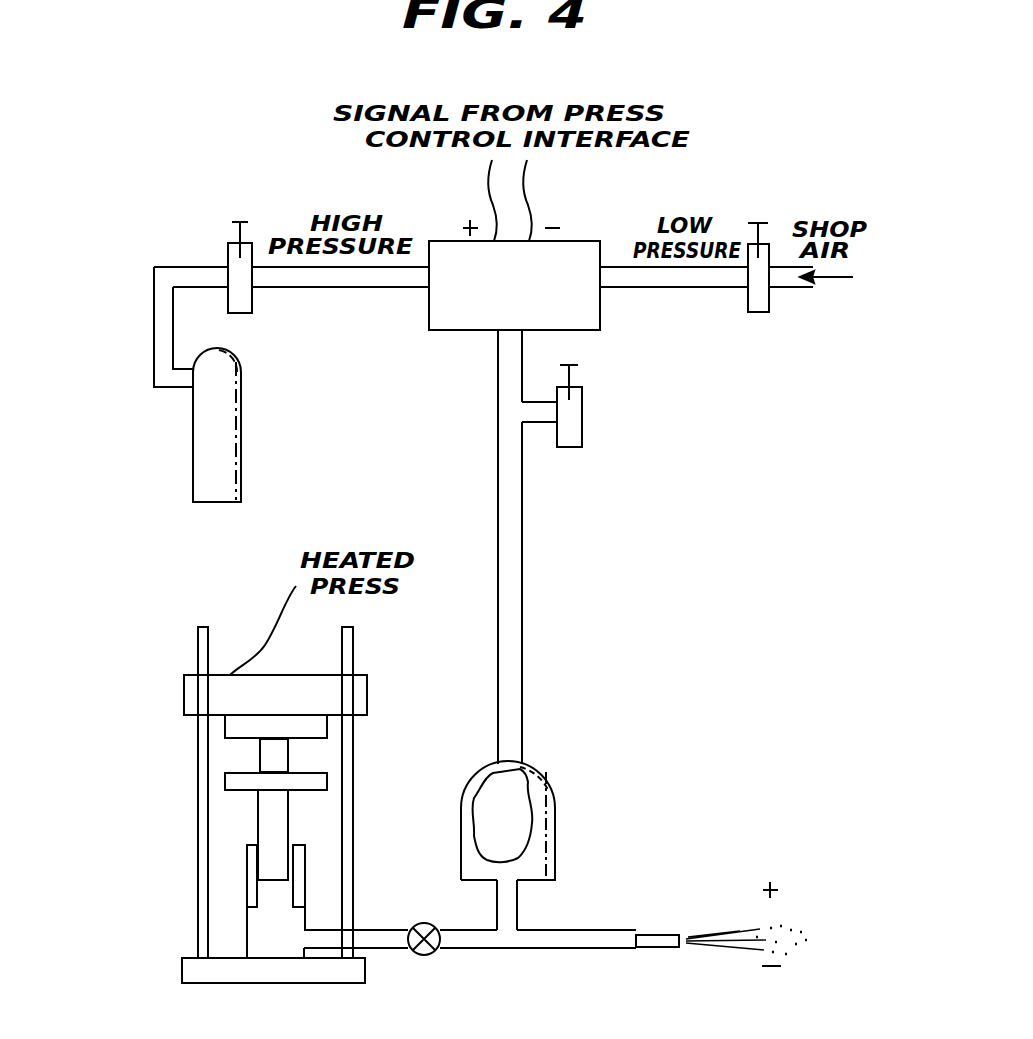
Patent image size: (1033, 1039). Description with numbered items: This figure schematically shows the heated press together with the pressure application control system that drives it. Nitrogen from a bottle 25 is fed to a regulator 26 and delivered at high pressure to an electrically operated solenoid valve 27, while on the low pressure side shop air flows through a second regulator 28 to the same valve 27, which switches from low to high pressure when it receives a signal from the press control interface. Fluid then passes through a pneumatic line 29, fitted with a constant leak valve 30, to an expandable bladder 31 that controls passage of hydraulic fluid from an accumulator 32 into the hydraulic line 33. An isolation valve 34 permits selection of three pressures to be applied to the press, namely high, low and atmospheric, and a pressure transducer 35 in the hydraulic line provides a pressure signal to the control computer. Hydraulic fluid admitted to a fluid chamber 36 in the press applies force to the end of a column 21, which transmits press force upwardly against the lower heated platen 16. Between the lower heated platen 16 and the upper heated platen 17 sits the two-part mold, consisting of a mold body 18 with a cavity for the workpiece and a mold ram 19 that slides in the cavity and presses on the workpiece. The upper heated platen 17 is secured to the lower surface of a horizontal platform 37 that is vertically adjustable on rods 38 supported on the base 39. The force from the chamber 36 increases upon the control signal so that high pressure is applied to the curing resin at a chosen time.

The lower heated platen 16 is at (318, 782).
The upper heated platen 17 is at (318, 728).
The mold body 18 is at (204, 753).
The mold ram 19 is at (265, 757).
The column 21 is at (282, 815).
The bottle 25 is at (224, 431).
The regulator 26 is at (230, 258).
The solenoid valve 27 is at (570, 253).
The regulator 28 is at (762, 300).
The pneumatic line 29 is at (514, 521).
The constant leak valve 30 is at (578, 427).
The expandable bladder 31 is at (507, 795).
The accumulator 32 is at (557, 832).
The hydraulic line 33 is at (478, 938).
The isolation valve 34 is at (426, 956).
The pressure transducer 35 is at (656, 936).
The fluid chamber 36 is at (305, 880).
The horizontal platform 37 is at (283, 696).
The rods 38 is at (200, 849).
The base 39 is at (195, 971).